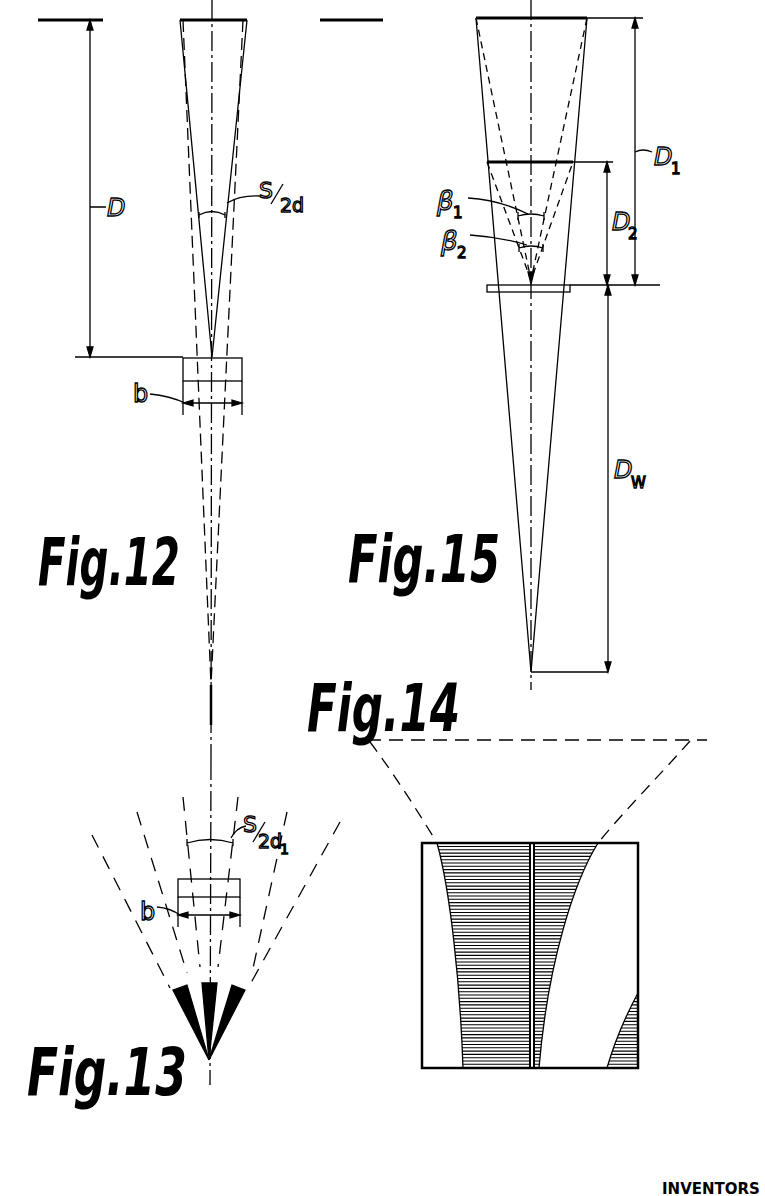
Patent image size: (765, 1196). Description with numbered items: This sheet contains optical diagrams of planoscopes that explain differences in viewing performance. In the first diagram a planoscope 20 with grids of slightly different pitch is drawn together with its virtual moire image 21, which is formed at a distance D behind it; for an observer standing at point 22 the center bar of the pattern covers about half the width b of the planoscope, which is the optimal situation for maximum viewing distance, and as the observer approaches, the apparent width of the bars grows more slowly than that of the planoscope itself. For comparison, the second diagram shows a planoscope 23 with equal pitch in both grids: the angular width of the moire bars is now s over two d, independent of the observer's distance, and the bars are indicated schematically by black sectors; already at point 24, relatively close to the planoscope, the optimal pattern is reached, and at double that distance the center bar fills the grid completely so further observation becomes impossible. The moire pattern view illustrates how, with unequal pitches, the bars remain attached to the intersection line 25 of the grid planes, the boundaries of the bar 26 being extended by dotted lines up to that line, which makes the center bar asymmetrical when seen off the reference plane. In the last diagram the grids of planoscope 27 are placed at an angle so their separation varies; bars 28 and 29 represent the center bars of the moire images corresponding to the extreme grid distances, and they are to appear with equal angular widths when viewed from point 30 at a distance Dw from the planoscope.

In FIG. 12, the planoscope 20 is at (236, 371).
In FIG. 12, the virtual moire image 21 is at (244, 22).
In FIG. 12, the observer point 22 is at (210, 722).
In FIG. 13, the planoscope 23 is at (240, 887).
In FIG. 13, the observation point 24 is at (219, 1023).
In FIG. 14, the intersection line 25 is at (540, 742).
In FIG. 14, the moire bar 26 is at (465, 913).
In FIG. 15, the planoscope 27 is at (487, 291).
In FIG. 15, the center bar of moire image 28 is at (567, 20).
In FIG. 15, the center bar of moire image 29 is at (487, 160).
In FIG. 15, the viewing point 30 is at (530, 672).